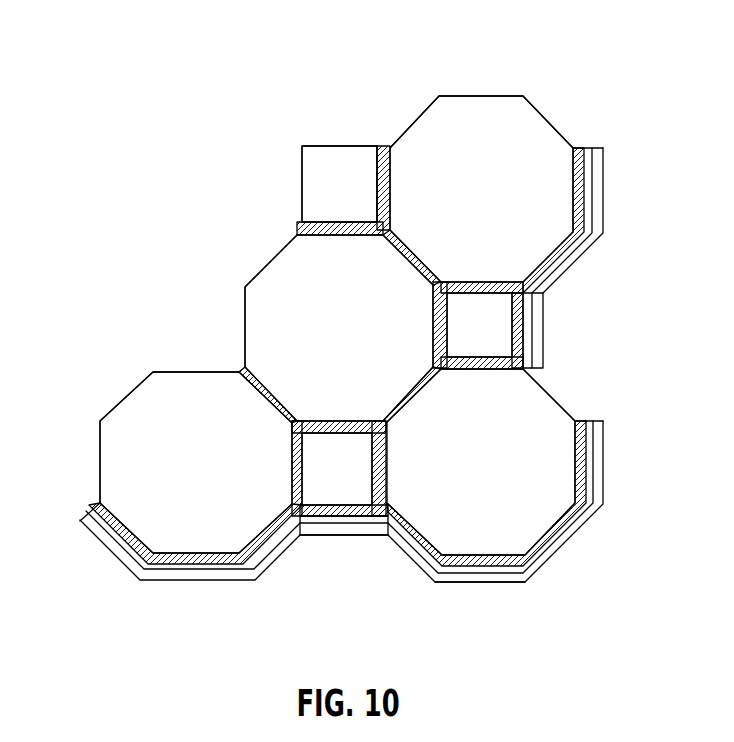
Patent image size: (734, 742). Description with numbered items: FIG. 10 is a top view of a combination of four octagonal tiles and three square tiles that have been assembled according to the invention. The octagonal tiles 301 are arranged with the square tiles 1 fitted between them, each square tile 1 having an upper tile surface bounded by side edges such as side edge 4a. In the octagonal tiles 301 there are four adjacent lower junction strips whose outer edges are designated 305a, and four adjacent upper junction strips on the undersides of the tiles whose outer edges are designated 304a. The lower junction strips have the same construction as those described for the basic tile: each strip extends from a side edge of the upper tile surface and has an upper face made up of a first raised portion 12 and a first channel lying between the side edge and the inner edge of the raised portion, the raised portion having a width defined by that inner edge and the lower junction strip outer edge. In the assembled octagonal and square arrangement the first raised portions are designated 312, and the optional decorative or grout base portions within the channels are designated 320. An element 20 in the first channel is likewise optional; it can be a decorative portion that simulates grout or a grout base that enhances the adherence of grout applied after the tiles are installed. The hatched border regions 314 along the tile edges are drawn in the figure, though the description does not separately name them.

The octagonal tile 301 is at (466, 210).
The square tile 1 is at (334, 195).
The hatched edge region 314 is at (383, 143).
The optional decorative or grout base portion 320 is at (583, 147).
The first raised portion 312 is at (602, 194).
The first raised portion 12 is at (545, 322).
The optional element within first channel 20 is at (313, 524).
The upper junction strip outer edge 304a is at (428, 107).
The side edge 4a is at (325, 146).
The lower junction strip outer edge 305a is at (567, 550).